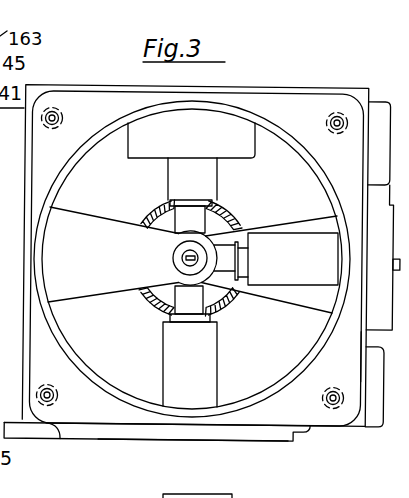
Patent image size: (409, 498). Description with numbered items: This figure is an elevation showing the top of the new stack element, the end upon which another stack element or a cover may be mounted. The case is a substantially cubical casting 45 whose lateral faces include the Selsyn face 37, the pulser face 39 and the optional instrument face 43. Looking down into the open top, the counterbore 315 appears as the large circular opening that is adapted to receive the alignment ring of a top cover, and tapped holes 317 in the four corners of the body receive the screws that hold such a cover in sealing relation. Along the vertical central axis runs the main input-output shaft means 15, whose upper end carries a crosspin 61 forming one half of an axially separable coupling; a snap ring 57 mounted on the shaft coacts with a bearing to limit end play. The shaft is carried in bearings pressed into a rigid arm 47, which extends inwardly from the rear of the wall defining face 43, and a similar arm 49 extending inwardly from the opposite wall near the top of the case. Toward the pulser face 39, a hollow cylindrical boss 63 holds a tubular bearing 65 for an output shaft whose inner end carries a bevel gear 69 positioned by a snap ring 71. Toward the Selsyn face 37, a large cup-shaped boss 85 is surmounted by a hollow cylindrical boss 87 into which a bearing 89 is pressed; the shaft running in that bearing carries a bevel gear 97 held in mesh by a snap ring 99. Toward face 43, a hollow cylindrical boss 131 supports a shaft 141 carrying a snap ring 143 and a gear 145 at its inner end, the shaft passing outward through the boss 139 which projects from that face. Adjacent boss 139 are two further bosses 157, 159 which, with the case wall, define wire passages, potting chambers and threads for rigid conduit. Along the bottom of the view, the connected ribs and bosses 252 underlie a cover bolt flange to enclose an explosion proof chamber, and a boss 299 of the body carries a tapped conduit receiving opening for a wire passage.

The input-output shaft means 15 is at (186, 257).
The Selsyn face 37 is at (47, 81).
The pulser face 39 is at (254, 445).
The optional instrument face 43 is at (358, 369).
The body casting 45 is at (262, 100).
The rigid arm 47 is at (283, 230).
The arm 49 is at (93, 227).
The snap ring 57 is at (180, 266).
The crosspin 61 is at (174, 259).
The hollow cylindrical boss 63 is at (204, 378).
The tubular bearing 65 is at (206, 320).
The bevel gear 69 is at (143, 300).
The snap ring 71 is at (168, 314).
The cup-shaped boss 85 is at (148, 148).
The hollow cylindrical boss 87 is at (212, 178).
The bearing 89 is at (194, 203).
The bevel gear 97 is at (157, 210).
The snap ring 99 is at (231, 204).
The hollow cylindrical boss 131 is at (270, 274).
The boss 139 is at (372, 308).
The shaft 141 is at (395, 264).
The snap ring 143 is at (240, 253).
The gear 145 is at (222, 268).
The boss 157 is at (378, 110).
The boss 159 is at (372, 414).
The connected ribs and bosses 252 is at (194, 443).
The boss 299 is at (34, 432).
The counterbore 315 is at (265, 128).
The tapped holes 317 is at (63, 117).